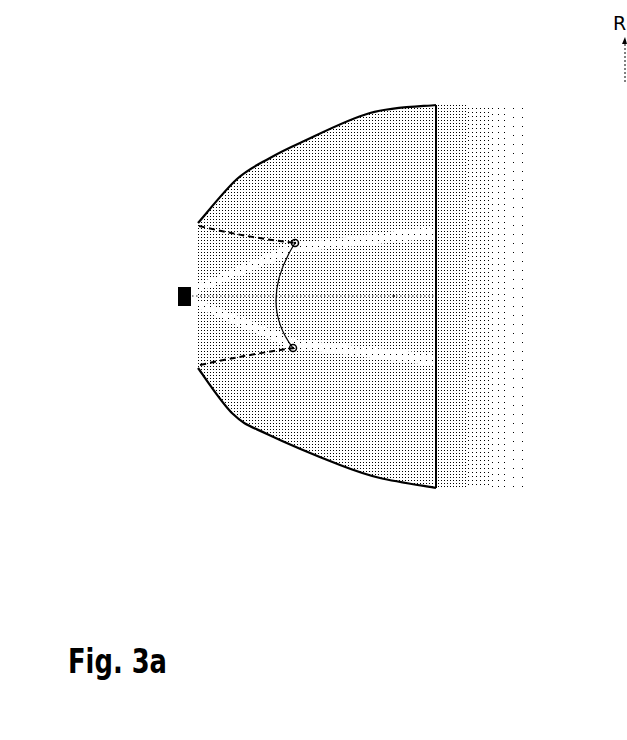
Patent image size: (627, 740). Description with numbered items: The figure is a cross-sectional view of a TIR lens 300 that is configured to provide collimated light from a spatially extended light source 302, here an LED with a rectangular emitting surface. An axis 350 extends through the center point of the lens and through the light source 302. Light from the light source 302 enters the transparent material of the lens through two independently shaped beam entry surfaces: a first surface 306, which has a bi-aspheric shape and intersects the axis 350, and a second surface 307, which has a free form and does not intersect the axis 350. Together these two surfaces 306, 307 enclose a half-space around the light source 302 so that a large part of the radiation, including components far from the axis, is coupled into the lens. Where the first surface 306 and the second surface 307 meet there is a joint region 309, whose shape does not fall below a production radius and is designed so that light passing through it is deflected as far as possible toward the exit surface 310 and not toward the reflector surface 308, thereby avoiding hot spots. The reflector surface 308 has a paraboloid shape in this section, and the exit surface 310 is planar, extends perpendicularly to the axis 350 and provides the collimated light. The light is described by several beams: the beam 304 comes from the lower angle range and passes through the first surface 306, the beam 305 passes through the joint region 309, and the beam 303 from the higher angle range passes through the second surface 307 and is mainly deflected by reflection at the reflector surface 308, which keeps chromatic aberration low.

The TIR lens 300 is at (330, 108).
The light source 302 is at (177, 293).
The beam 303 is at (218, 255).
The beam 304 is at (240, 299).
The beam 305 is at (237, 325).
The first surface 306 is at (279, 330).
The second surface 307 is at (215, 224).
The reflector surface 308 is at (237, 419).
The joint region 309 is at (295, 241).
The exit surface 310 is at (440, 187).
The axis 350 is at (398, 300).